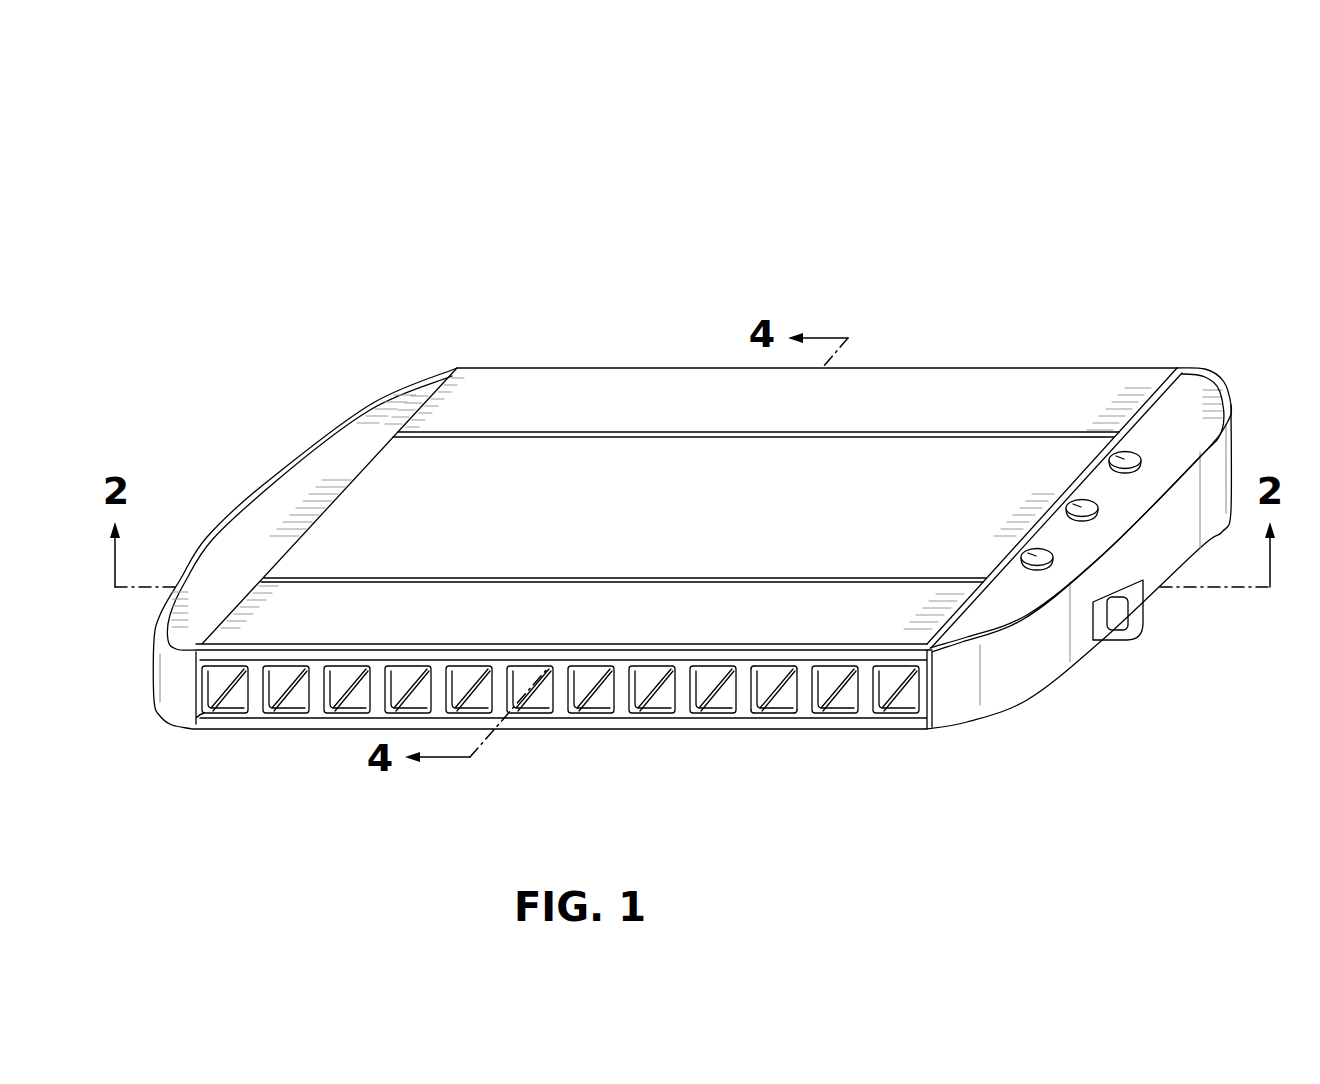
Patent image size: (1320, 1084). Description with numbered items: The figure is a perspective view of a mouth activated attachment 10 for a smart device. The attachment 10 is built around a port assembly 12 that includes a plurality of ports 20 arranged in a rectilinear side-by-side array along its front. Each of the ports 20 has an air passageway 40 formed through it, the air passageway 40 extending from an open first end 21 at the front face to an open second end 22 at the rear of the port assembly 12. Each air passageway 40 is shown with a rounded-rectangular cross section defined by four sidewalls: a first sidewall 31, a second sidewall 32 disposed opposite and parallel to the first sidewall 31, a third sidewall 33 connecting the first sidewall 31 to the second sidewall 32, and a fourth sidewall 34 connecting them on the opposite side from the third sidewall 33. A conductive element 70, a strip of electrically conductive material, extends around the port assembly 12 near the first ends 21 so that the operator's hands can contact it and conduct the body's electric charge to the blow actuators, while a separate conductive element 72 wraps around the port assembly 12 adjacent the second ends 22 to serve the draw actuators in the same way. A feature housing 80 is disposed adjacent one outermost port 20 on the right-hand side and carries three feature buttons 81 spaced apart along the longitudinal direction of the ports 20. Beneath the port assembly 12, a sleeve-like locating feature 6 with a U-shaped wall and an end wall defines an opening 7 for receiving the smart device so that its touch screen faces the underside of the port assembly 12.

The attachment 10 is at (725, 462).
The port assembly 12 is at (873, 737).
The ports 20 is at (770, 677).
The air passageway 40 is at (658, 698).
The first end 21 is at (748, 667).
The second end 22 is at (893, 367).
The first sidewall 31 is at (772, 717).
The second sidewall 32 is at (773, 662).
The third sidewall 33 is at (748, 690).
The fourth sidewall 34 is at (797, 687).
The conductive element 70 is at (315, 607).
The conductive element 72 is at (558, 387).
The feature housing 80 is at (1180, 414).
The feature buttons 81 is at (1023, 550).
The locating feature 6 is at (1167, 612).
The opening 7 is at (1120, 625).